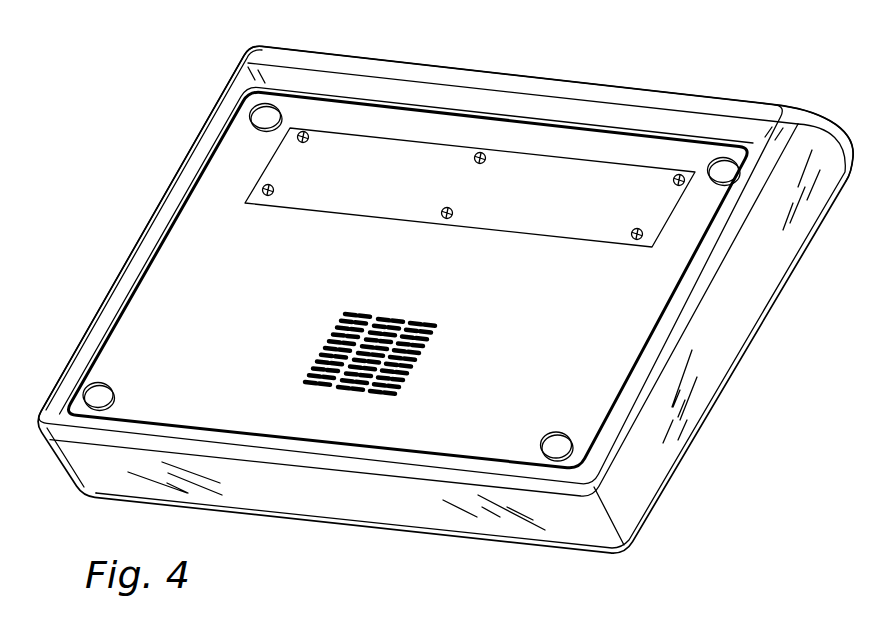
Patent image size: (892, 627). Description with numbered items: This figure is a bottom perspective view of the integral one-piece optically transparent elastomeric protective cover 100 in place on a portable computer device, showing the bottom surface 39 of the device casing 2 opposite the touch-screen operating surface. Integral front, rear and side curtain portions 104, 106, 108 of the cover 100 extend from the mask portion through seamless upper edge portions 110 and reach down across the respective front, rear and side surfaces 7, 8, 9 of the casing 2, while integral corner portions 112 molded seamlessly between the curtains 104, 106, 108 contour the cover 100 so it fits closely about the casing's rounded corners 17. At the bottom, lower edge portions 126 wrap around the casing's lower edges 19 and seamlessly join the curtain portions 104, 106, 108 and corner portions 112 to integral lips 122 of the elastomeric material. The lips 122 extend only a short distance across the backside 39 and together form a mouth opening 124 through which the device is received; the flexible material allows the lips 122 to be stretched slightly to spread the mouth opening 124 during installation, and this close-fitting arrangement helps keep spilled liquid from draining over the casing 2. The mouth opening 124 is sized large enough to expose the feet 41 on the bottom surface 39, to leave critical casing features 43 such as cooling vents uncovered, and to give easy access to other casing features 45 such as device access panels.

The casing 2 is at (172, 252).
The front surface 7 is at (166, 503).
The rear surface 8 is at (570, 78).
The side surface 9 is at (750, 290).
The corner 17 is at (622, 520).
The lower edge 19 is at (327, 466).
The bottom surface 39 is at (527, 372).
The feet 41 is at (254, 110).
The casing features 43 is at (318, 333).
The casing features 45 is at (355, 216).
The protective cover 100 is at (740, 68).
The front curtain portion 104 is at (493, 538).
The rear curtain portion 106 is at (847, 118).
The side curtain portion 108 is at (173, 180).
The upper edge portion 110 is at (786, 283).
The corner portion 112 is at (532, 575).
The lip 122 is at (458, 100).
The mouth opening 124 is at (221, 130).
The lower edge portion 126 is at (328, 60).